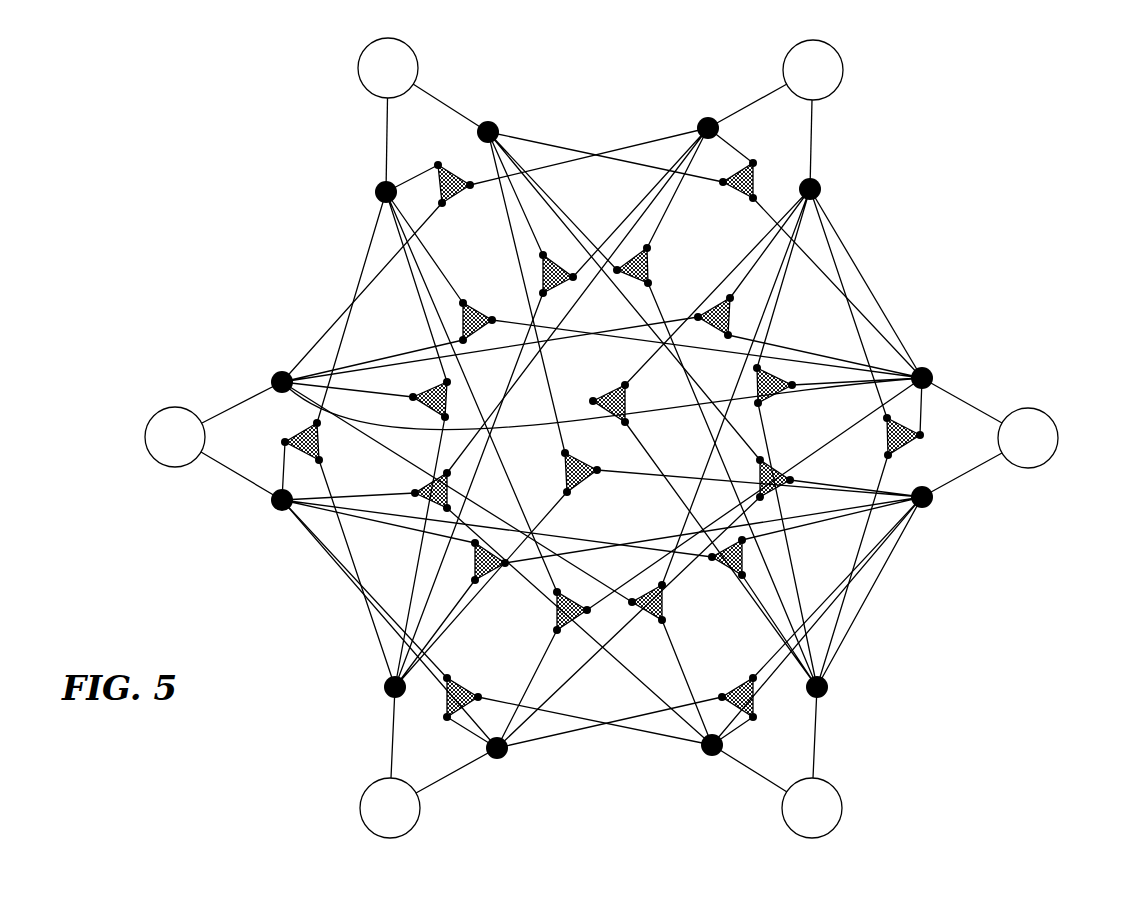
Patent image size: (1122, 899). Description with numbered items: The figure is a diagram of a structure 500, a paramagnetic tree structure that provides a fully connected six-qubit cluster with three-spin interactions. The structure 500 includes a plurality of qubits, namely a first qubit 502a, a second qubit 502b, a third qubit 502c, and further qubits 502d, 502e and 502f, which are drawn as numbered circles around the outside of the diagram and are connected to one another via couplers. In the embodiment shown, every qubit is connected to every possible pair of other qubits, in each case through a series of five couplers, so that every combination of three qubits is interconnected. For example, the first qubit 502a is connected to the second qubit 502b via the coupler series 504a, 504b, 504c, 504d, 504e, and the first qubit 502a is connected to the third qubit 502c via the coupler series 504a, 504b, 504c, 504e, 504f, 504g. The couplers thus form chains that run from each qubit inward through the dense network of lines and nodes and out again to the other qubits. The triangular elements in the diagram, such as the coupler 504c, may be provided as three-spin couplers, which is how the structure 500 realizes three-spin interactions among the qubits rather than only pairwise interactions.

The structure 500 is at (190, 188).
The first qubit 502a is at (360, 58).
The second qubit 502b is at (843, 62).
The third qubit 502c is at (1040, 412).
The qubit 502d is at (839, 793).
The qubit 502e is at (363, 793).
The qubit 502f is at (173, 408).
The coupler 504a is at (446, 101).
The coupler 504b is at (547, 145).
The coupler 504c is at (758, 178).
The coupler 504d is at (737, 149).
The coupler 504e is at (758, 98).
The coupler 504f is at (883, 330).
The coupler 504g is at (967, 407).